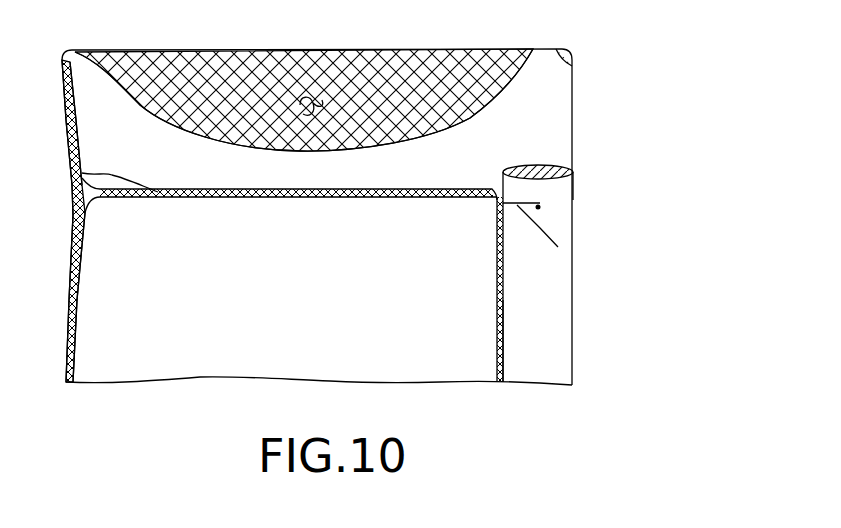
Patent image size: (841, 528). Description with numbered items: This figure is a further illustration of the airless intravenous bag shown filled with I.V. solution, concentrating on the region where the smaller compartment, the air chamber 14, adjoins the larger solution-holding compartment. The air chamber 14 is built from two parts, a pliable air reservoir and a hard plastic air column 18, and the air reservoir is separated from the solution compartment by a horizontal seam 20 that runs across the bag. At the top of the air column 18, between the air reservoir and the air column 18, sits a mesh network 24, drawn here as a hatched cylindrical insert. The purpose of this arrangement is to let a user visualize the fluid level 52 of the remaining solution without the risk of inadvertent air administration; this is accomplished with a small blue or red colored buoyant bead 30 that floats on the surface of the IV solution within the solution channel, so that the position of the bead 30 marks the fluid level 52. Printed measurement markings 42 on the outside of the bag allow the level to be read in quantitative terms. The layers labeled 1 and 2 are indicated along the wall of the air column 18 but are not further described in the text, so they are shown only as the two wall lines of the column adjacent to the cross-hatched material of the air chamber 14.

The first wall layer 1 is at (497, 278).
The second wall layer 2 is at (501, 357).
The air chamber 14 is at (547, 207).
The air column 18 is at (560, 303).
The horizontal seam 20 is at (80, 173).
The mesh network 24 is at (528, 170).
The buoyant bead 30 is at (548, 204).
The measurement markings 42 is at (507, 327).
The fluid level 52 is at (558, 247).